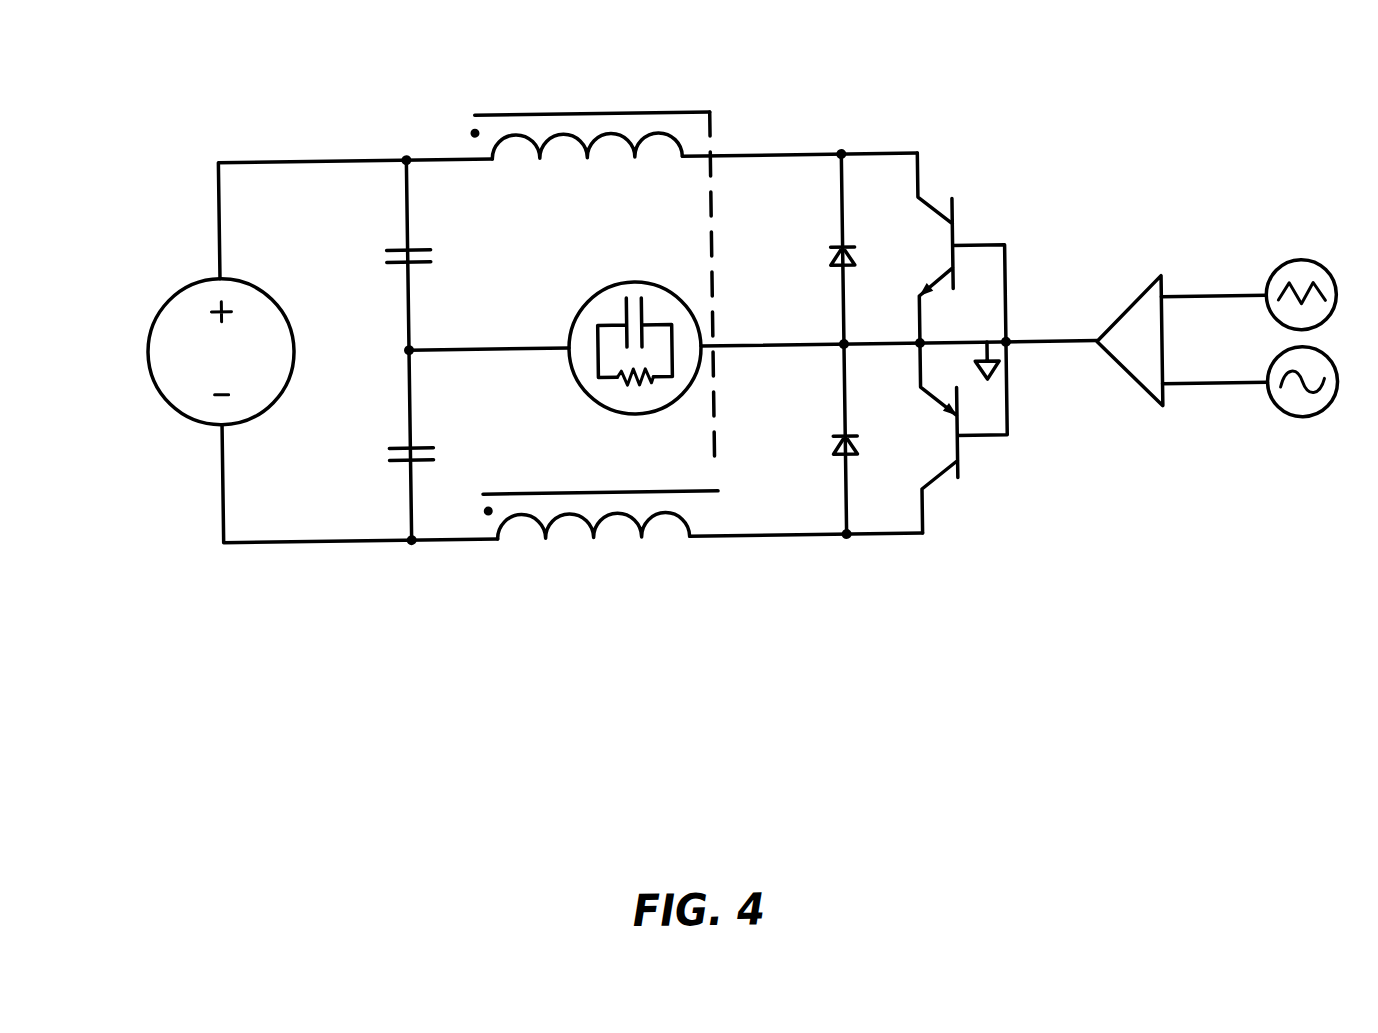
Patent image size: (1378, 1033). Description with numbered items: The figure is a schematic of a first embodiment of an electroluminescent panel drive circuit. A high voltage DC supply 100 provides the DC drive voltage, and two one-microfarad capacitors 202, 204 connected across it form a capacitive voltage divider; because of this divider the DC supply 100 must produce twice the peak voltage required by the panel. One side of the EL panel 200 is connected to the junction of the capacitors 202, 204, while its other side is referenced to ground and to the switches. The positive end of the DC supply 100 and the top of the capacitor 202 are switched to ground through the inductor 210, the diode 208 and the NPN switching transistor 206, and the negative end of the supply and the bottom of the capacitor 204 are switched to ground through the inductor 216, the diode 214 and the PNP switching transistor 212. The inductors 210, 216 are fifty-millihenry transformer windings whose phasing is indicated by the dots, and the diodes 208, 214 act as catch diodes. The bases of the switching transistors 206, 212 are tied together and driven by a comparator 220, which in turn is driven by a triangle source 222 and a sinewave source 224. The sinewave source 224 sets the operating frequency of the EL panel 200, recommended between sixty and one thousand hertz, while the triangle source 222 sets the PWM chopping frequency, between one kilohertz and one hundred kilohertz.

The high voltage DC supply 100 is at (183, 284).
The EL panel 200 is at (578, 277).
The capacitor 202 is at (386, 240).
The capacitor 204 is at (382, 431).
The NPN switching transistor 206 is at (967, 197).
The diode 208 is at (834, 241).
The inductor 210 is at (488, 103).
The PNP switching transistor 212 is at (970, 482).
The diode 214 is at (824, 448).
The inductor 216 is at (527, 547).
The comparator 220 is at (1128, 295).
The triangle source 222 is at (1288, 266).
The sinewave source 224 is at (1284, 422).